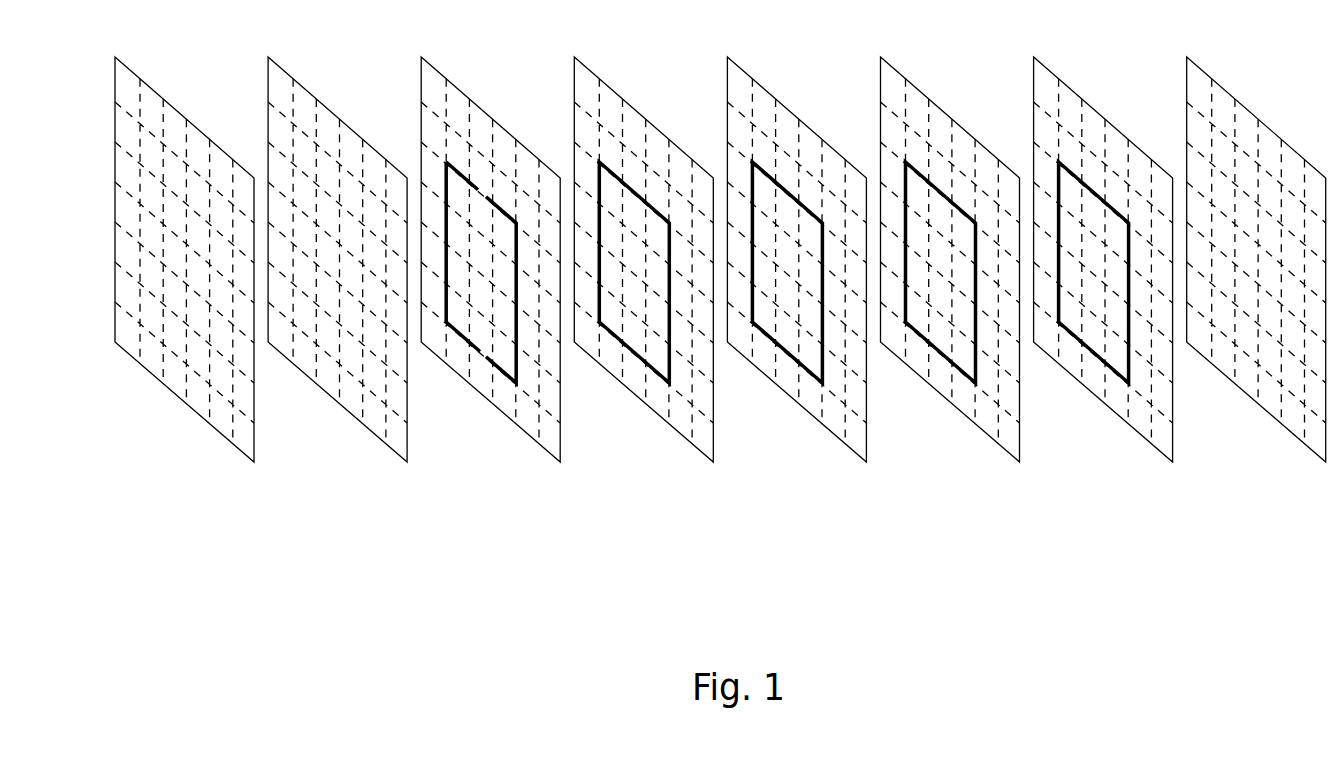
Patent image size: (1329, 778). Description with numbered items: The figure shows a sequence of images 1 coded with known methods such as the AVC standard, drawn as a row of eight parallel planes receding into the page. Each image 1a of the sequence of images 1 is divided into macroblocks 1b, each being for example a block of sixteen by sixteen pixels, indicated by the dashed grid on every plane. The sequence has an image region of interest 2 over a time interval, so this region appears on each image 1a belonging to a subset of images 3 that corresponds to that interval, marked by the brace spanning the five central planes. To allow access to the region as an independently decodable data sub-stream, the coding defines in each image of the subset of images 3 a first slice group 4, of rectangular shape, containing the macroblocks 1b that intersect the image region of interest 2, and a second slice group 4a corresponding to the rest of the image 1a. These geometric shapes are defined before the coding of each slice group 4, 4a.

The sequence of images 1 is at (170, 507).
The image 1a is at (613, 422).
The macroblock 1b is at (332, 380).
The image region of interest 2 is at (655, 350).
The subset of images 3 is at (1179, 470).
The slice group 4 is at (640, 348).
The second slice group 4a is at (428, 80).